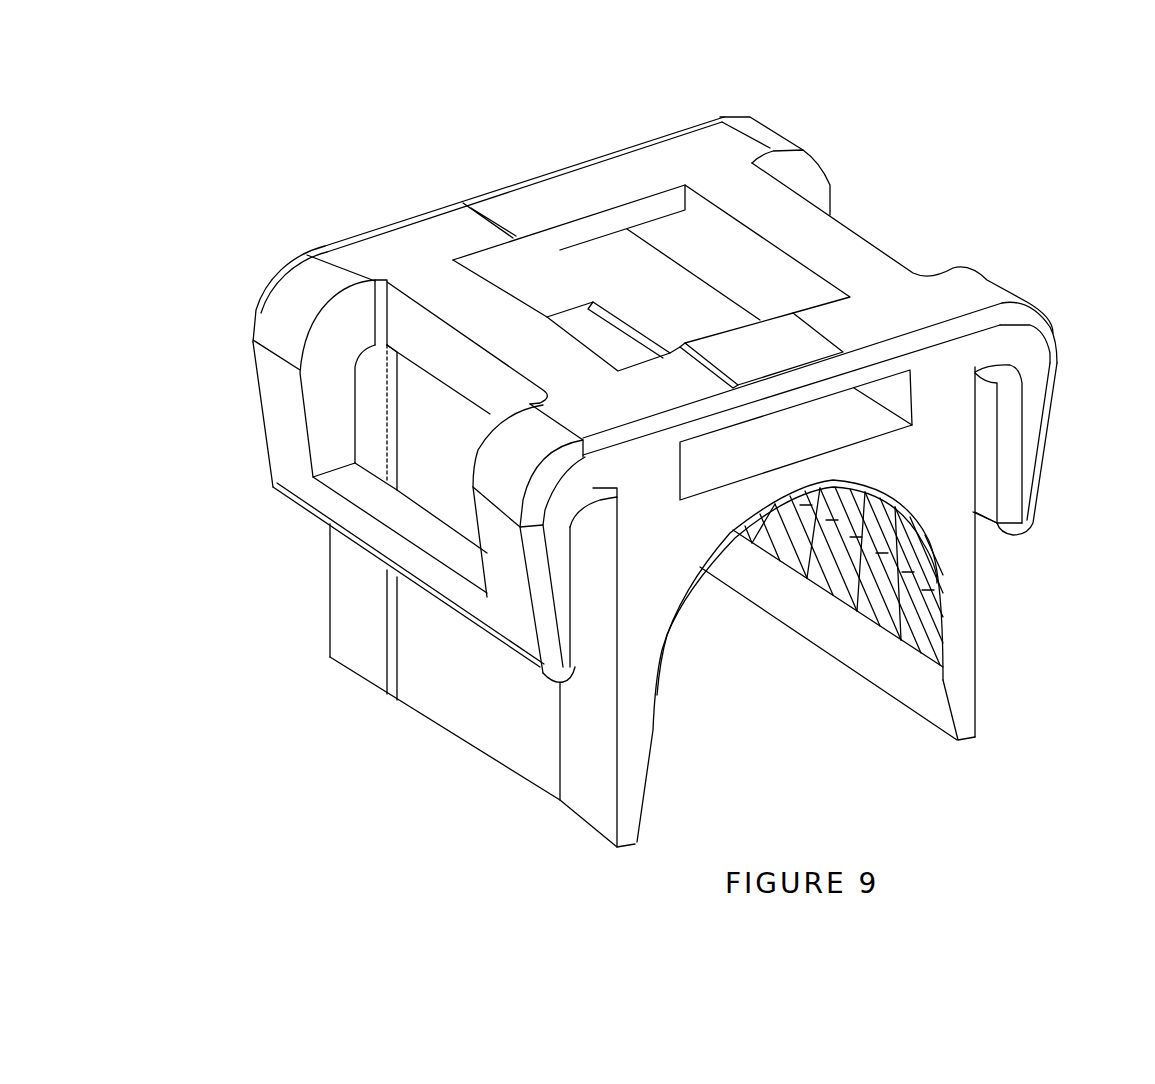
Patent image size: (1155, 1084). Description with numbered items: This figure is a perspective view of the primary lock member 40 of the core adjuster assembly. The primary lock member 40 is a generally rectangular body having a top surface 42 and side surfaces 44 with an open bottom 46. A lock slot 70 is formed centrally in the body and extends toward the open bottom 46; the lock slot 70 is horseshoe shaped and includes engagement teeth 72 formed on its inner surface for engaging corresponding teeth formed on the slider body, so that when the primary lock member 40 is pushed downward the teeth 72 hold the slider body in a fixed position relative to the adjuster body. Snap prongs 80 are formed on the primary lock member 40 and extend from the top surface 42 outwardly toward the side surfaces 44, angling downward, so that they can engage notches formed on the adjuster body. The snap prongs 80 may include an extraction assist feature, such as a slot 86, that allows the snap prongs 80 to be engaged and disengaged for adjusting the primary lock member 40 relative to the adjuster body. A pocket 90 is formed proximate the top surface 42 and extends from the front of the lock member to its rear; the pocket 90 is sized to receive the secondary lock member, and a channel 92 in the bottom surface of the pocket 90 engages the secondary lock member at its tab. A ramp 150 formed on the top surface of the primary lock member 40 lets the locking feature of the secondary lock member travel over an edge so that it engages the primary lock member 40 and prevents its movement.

The primary lock member 40 is at (683, 135).
The top surface 42 is at (827, 238).
The side surfaces 44 is at (522, 740).
The open bottom 46 is at (663, 847).
The lock slot 70 is at (833, 767).
The engagement teeth 72 is at (883, 623).
The snap prongs 80 is at (1050, 460).
The slot 86 is at (420, 474).
The pocket 90 is at (1043, 323).
The channel 92 is at (580, 327).
The ramp 150 is at (588, 187).